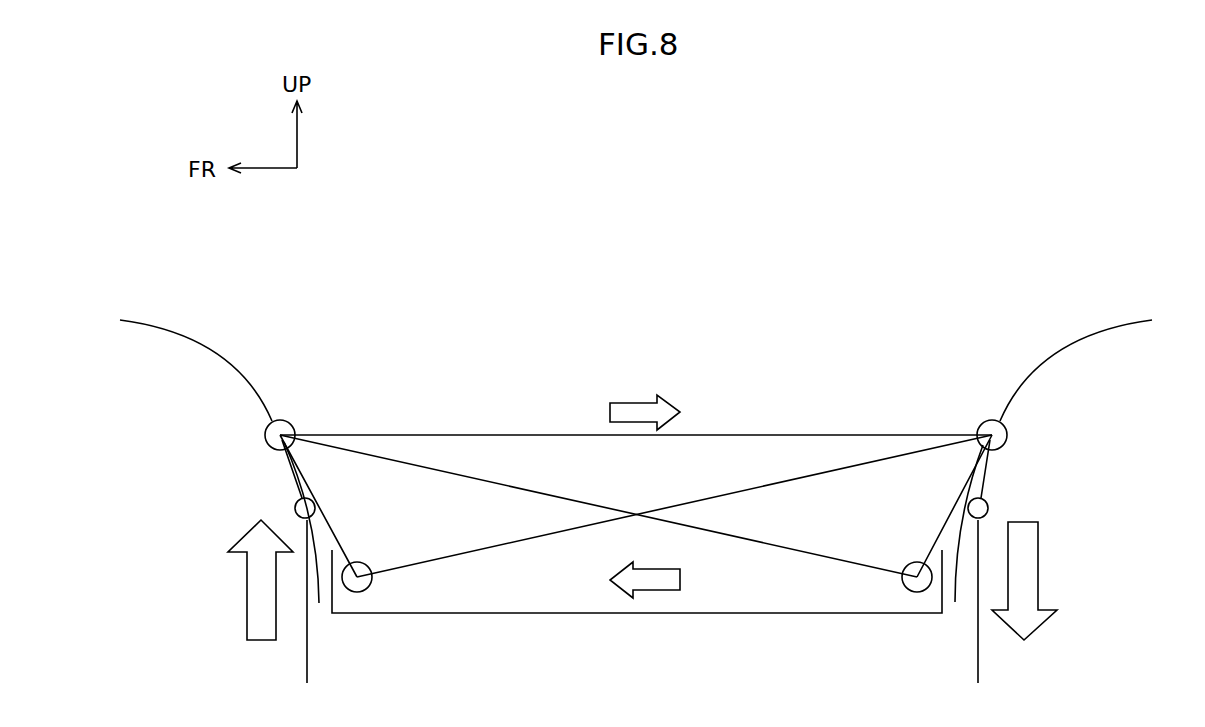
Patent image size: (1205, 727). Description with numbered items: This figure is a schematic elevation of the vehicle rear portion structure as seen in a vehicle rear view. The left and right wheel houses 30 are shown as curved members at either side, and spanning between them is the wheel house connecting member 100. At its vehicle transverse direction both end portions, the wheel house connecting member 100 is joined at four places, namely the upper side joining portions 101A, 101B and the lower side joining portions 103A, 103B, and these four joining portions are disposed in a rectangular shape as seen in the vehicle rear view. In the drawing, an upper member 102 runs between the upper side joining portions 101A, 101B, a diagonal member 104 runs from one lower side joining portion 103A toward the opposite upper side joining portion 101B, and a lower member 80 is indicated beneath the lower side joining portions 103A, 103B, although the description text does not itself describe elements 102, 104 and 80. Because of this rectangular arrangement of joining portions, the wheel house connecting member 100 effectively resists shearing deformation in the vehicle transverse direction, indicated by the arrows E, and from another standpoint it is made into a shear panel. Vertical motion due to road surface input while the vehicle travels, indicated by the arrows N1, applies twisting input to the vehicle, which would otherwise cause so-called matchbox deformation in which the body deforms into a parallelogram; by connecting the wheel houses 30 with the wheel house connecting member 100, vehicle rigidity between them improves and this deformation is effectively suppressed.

The wheel house 30 is at (177, 332).
The lower frame member 80 is at (703, 613).
The wheel house connecting member 100 is at (748, 430).
The upper side joining portion 101A is at (295, 425).
The upper side joining portion 101B is at (982, 422).
The upper cross member 102 is at (533, 438).
The lower side joining portion 103A is at (367, 583).
The lower side joining portion 103B is at (915, 592).
The diagonal link member 104 is at (428, 552).
The arrow N1 is at (246, 593).
The arrows E is at (633, 402).